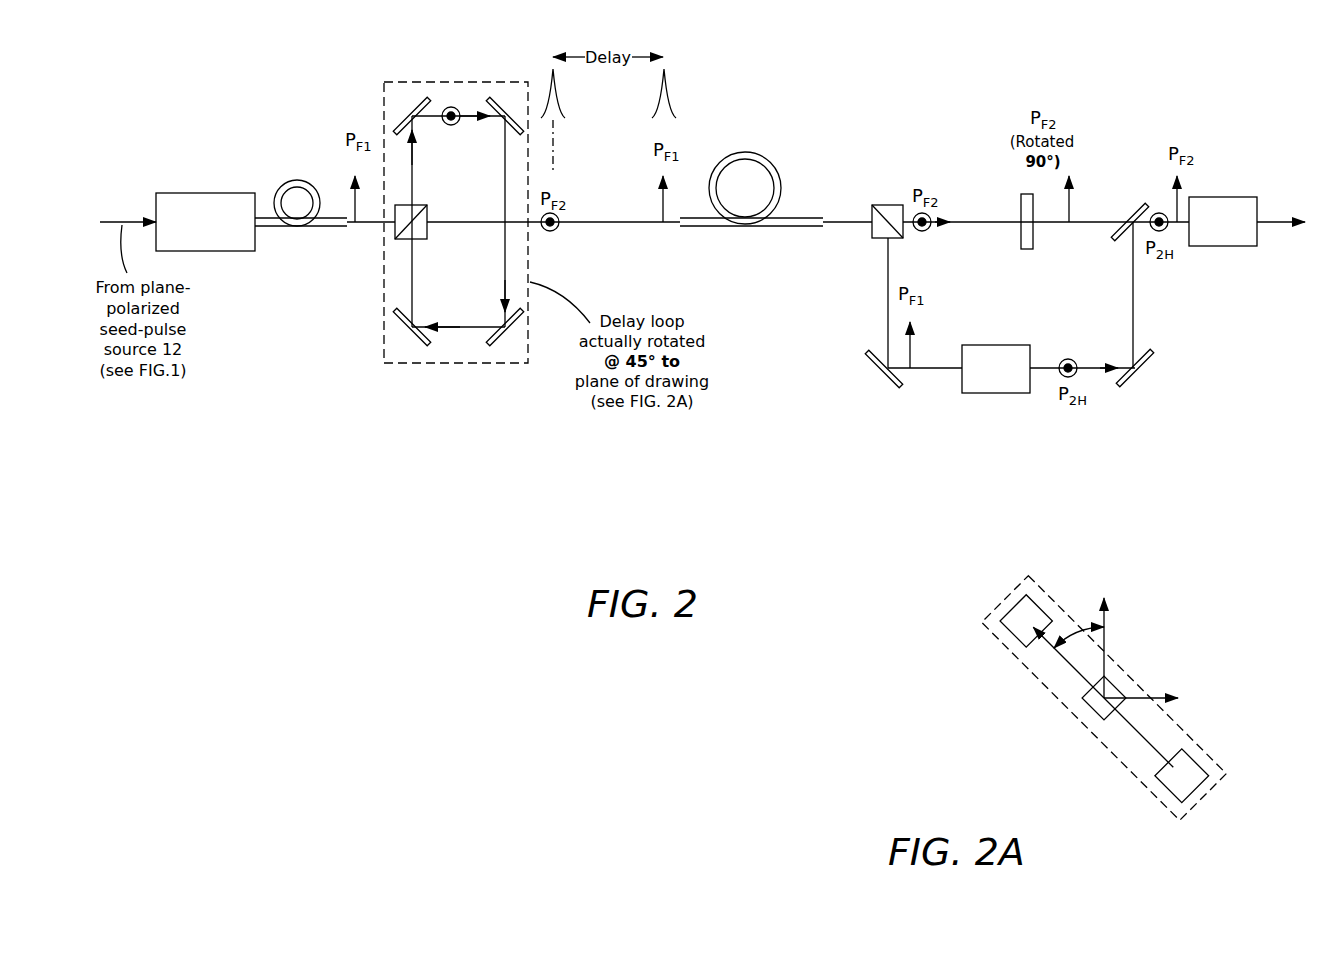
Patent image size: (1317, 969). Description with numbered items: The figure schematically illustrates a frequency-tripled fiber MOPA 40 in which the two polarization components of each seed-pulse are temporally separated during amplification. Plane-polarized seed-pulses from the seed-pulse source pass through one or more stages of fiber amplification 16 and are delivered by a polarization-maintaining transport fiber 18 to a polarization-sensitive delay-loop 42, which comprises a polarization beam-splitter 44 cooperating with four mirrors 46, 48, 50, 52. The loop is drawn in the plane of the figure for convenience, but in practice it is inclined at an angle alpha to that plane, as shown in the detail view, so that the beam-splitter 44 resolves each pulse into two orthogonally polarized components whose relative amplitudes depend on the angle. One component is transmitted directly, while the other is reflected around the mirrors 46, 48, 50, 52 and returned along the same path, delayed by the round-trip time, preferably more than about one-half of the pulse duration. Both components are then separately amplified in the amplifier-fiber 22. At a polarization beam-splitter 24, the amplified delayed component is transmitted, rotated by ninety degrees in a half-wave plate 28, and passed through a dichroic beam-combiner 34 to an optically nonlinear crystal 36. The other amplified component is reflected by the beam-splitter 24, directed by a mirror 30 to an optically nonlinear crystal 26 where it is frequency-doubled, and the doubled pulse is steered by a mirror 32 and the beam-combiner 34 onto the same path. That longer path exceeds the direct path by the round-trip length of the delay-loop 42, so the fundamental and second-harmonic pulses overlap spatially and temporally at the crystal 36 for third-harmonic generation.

In FIG. 2, the fiber amplification stages 16 is at (213, 192).
In FIG. 2, the polarization-maintaining transport fiber 18 is at (297, 180).
In FIG. 2, the amplifier-fiber 22 is at (748, 156).
In FIG. 2, the polarization beam-splitter 24 is at (888, 210).
In FIG. 2, the optically nonlinear crystal 26 is at (985, 393).
In FIG. 2, the half-wave plate 28 is at (1021, 193).
In FIG. 2, the mirror 30 is at (875, 372).
In FIG. 2, the mirror 32 is at (1140, 380).
In FIG. 2, the dichroic beam-combiner 34 is at (1135, 205).
In FIG. 2, the optically nonlinear crystal 36 is at (1207, 250).
In FIG. 2, the frequency-tripled fiber-MOPA 40 is at (558, 497).
In FIG. 2, the polarization-sensitive delay-loop 42 is at (415, 244).
In FIG. 2A, the polarization-sensitive delay-loop 42 is at (1188, 724).
In FIG. 2, the polarization beam-splitter (beam-combiner) 44 is at (400, 246).
In FIG. 2, the mirror 46 is at (397, 115).
In FIG. 2, the mirror 48 is at (505, 95).
In FIG. 2, the mirror 50 is at (497, 347).
In FIG. 2, the mirror 52 is at (397, 335).